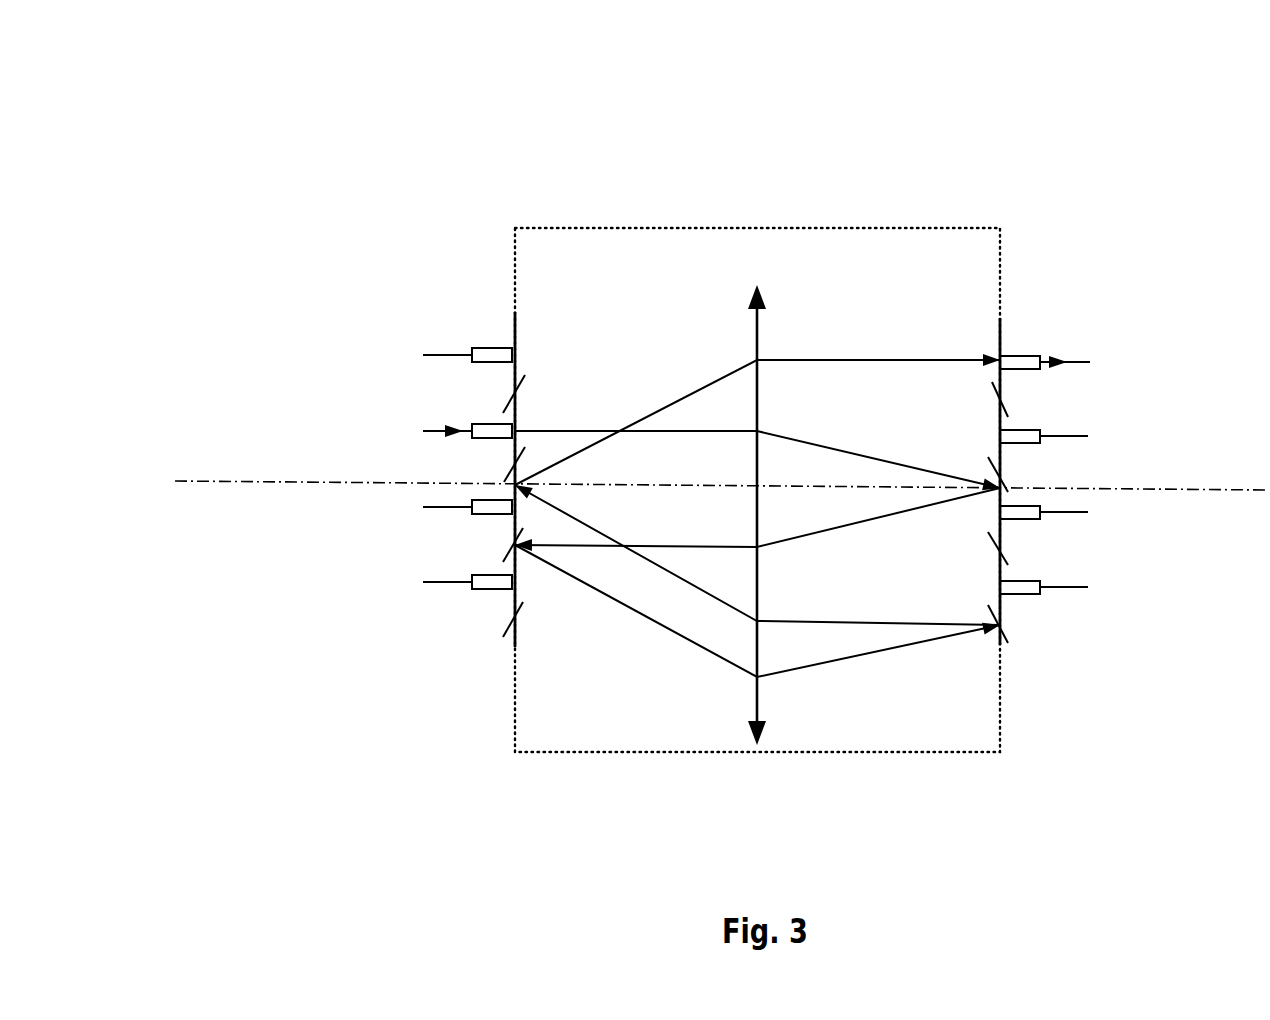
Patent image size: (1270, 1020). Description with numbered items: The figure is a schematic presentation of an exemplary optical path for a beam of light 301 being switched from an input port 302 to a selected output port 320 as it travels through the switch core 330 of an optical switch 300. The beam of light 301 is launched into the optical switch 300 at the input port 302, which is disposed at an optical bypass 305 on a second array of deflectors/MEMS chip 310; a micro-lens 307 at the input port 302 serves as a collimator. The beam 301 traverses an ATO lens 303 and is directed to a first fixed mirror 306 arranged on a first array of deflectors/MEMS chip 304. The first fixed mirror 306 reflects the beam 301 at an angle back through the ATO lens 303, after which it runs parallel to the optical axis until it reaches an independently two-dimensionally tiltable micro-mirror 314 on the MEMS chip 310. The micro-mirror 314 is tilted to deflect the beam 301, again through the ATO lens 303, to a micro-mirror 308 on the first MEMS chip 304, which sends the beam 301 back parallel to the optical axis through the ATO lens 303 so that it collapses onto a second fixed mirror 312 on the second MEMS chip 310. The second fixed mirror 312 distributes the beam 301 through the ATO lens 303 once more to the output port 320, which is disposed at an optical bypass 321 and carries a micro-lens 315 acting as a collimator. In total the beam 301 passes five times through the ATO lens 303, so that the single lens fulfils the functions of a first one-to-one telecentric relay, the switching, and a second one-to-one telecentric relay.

The optical switch 300 is at (911, 169).
The beam of light 301 is at (433, 424).
The input port 302 is at (511, 440).
The ATO lens 303 is at (757, 327).
The first array of deflectors/MEMS chip 304 is at (1003, 325).
The optical bypass 305 is at (518, 480).
The first fixed mirror 306 is at (988, 482).
The micro-lens 307 is at (495, 427).
The micro-mirror 308 is at (1003, 628).
The second array of deflectors/MEMS chip 310 is at (518, 325).
The second fixed mirror 312 is at (520, 478).
The independently 2D tiltable micro-mirror 314 is at (503, 552).
The micro-lens 315 is at (1022, 370).
The output port 320 is at (1005, 352).
The optical bypass 321 is at (1000, 355).
The switch core 330 is at (605, 228).